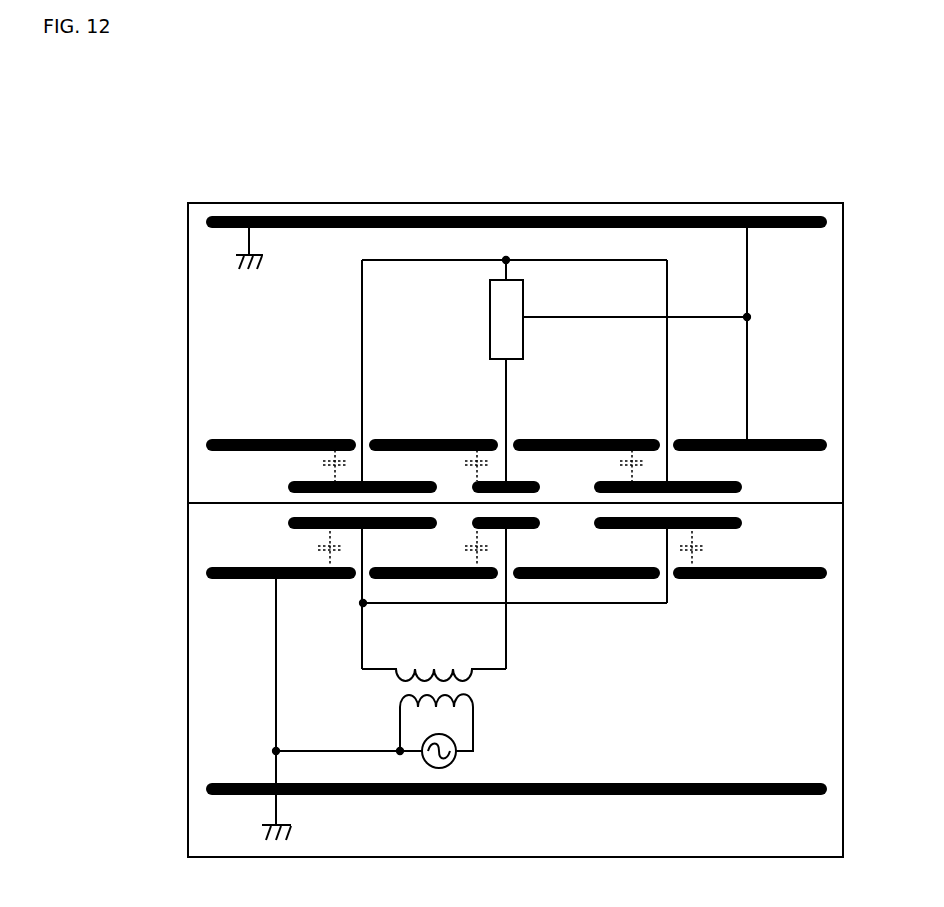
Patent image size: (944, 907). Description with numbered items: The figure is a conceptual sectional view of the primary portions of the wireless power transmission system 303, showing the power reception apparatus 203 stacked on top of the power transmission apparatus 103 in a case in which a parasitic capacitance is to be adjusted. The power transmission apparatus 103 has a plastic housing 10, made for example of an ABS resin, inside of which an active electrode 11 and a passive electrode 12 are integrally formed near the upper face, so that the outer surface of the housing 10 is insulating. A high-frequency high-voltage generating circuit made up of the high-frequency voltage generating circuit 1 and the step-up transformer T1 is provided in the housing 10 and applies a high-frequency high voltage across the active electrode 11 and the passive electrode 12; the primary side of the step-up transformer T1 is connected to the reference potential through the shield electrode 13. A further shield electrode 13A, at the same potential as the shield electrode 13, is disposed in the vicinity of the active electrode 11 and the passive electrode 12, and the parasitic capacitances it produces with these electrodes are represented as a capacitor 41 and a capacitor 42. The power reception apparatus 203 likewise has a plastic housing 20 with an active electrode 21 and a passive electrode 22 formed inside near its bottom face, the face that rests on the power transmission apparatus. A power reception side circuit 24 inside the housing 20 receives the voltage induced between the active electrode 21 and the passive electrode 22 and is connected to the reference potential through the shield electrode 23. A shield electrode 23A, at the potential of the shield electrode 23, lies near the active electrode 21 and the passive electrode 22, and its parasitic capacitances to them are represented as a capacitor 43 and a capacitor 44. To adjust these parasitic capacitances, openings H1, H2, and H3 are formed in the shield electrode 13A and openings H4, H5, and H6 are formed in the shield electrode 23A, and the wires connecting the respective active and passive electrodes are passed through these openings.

The wireless power transmission system 303 is at (280, 151).
The power reception apparatus 203 is at (174, 327).
The power transmission apparatus 103 is at (174, 630).
The housing 20 is at (204, 203).
The housing 10 is at (188, 808).
The shield electrode 23 is at (755, 217).
The shield electrode 13 is at (797, 795).
The shield electrode 23A is at (246, 440).
The shield electrode 13A is at (243, 578).
The passive electrode 22 is at (293, 485).
The active electrode 21 is at (538, 485).
The passive electrode 12 is at (290, 526).
The active electrode 11 is at (540, 527).
The capacitor 44 is at (471, 465).
The capacitor 43 is at (465, 465).
The capacitor 42 is at (512, 548).
The capacitor 41 is at (465, 548).
The power reception side circuit 24 is at (524, 296).
The opening H1 is at (365, 578).
The opening H2 is at (503, 578).
The opening H3 is at (667, 580).
The opening H4 is at (359, 440).
The opening H5 is at (503, 440).
The opening H6 is at (674, 440).
The step-up transformer T1 is at (436, 710).
The high-frequency voltage generating circuit 1 is at (452, 763).